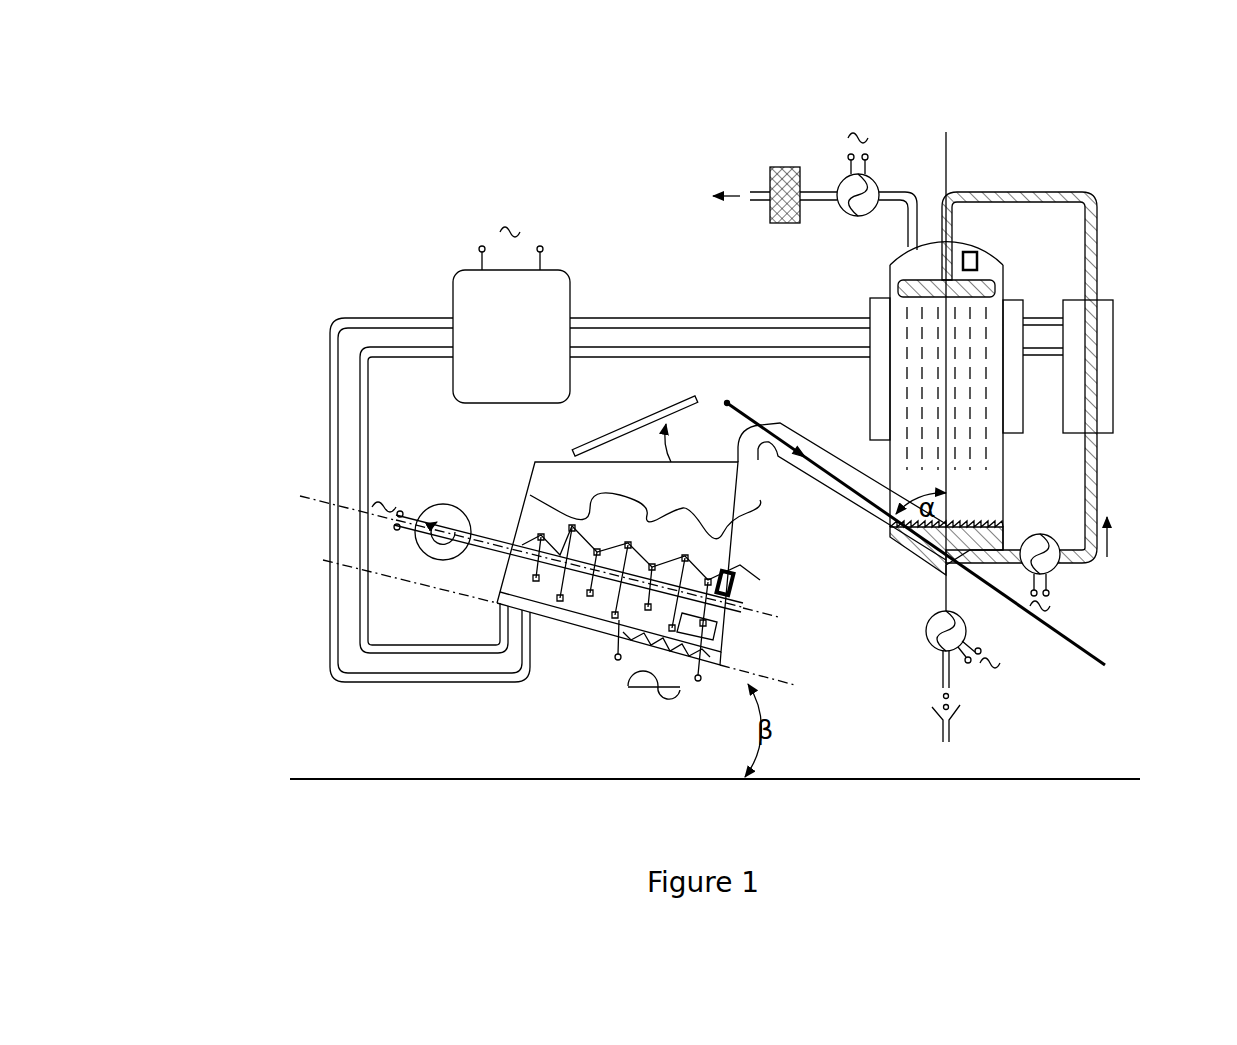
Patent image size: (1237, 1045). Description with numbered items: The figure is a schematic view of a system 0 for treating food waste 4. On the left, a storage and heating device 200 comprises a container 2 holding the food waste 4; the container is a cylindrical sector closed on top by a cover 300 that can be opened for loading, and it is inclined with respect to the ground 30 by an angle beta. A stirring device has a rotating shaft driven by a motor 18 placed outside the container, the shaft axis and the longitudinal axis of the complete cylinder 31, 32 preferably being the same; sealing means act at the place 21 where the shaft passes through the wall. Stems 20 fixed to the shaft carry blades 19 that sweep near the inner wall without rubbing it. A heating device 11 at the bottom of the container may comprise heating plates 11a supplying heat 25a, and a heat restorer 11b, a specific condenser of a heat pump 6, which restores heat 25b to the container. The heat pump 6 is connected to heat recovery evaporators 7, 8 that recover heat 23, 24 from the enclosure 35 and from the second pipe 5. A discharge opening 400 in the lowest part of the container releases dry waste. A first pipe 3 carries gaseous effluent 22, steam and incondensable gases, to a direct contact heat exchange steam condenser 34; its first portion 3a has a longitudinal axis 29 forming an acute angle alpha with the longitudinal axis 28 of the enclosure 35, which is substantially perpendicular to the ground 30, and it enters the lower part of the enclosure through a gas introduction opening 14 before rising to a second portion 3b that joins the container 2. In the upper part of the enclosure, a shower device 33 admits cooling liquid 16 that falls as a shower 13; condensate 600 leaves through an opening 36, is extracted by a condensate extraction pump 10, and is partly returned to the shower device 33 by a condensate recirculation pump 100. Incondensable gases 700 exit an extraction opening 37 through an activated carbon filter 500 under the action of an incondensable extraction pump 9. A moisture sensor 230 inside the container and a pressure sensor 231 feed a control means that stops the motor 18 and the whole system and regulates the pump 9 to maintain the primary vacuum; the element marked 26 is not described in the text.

The system 0 is at (360, 247).
The container 2 is at (462, 442).
The first pipe 3 is at (825, 497).
The first portion of the first pipe 3a is at (827, 452).
The second portion of the first pipe 3b is at (738, 458).
The food waste 4 is at (723, 566).
The second pipe 5 is at (1093, 235).
The heat pump 6 is at (472, 295).
The heat recovery 7 is at (1105, 332).
The heat recovery 8 is at (1013, 397).
The incondensable extraction pump 9 is at (845, 178).
The condensate extraction pump 10 is at (965, 648).
The heating device 11 is at (603, 638).
The heating plates 11a is at (645, 620).
The heat restorer 11b is at (555, 615).
The shower 13 is at (975, 445).
The gas introduction opening 14 is at (888, 503).
The cooling liquid 16 is at (920, 547).
The motor 18 is at (420, 546).
The blades 19 is at (547, 497).
The stems 20 is at (570, 532).
The place where the rotating shaft passes through the container wall 21 is at (523, 542).
The gaseous effluent 22 is at (758, 458).
The heat recovery 23 is at (1078, 311).
The heat recovery 24 is at (887, 312).
The heat supplied by heating plates 25a is at (648, 625).
The heat restored by heat pump 25b is at (570, 597).
The flow direction 26 is at (1110, 537).
The longitudinal axis of the enclosure 28 is at (945, 165).
The longitudinal axis of the first portion 29 is at (1110, 667).
The ground 30 is at (365, 777).
The axes 31, 32 is at (313, 495).
The shower device 33 is at (985, 283).
The direct contact heat exchange steam condenser 34 is at (1005, 357).
The enclosure 35 is at (1003, 440).
The opening for extracting the condensate 36 is at (953, 575).
The extraction opening for incondensable gases 37 is at (910, 250).
The condensate recirculation pump 100 is at (1045, 560).
The storage and heating device 200 is at (407, 487).
The moisture sensor 230 is at (726, 572).
The pressure sensor 231 is at (970, 255).
The cover 300 is at (612, 433).
The discharge opening 400 is at (720, 633).
The activated carbon filter 500 is at (780, 170).
The condensate 600 is at (965, 718).
The incondensable gases 700 is at (728, 190).